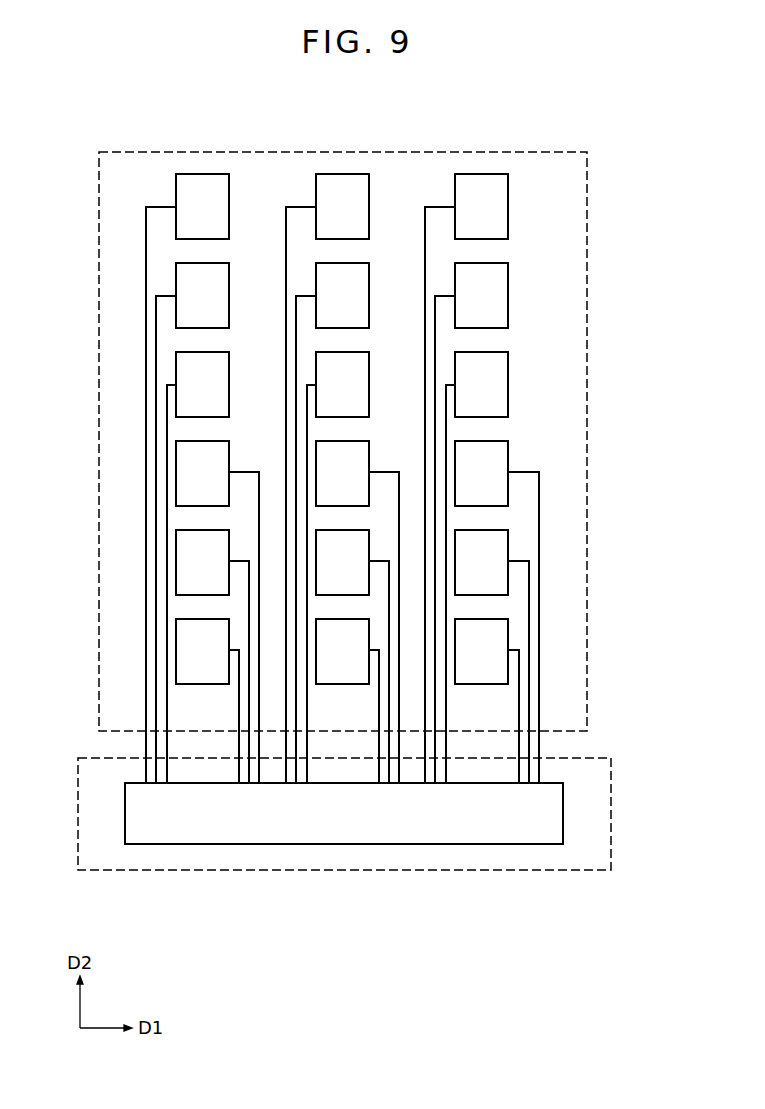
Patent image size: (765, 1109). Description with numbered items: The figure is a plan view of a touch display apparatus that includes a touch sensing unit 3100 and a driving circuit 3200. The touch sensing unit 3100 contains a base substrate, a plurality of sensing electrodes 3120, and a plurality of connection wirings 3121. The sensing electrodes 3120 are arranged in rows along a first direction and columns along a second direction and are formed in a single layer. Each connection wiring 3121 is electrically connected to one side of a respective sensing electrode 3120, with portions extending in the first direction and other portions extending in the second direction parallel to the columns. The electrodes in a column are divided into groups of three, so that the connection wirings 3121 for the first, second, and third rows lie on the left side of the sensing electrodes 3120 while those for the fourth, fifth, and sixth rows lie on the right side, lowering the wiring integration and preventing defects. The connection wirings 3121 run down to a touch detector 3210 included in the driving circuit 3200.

The touch sensing unit 3100 is at (588, 278).
The sensing electrode 3120 is at (200, 174).
The connection wiring 3121 is at (145, 248).
The driving circuit 3200 is at (612, 808).
The touch detector 3210 is at (344, 813).